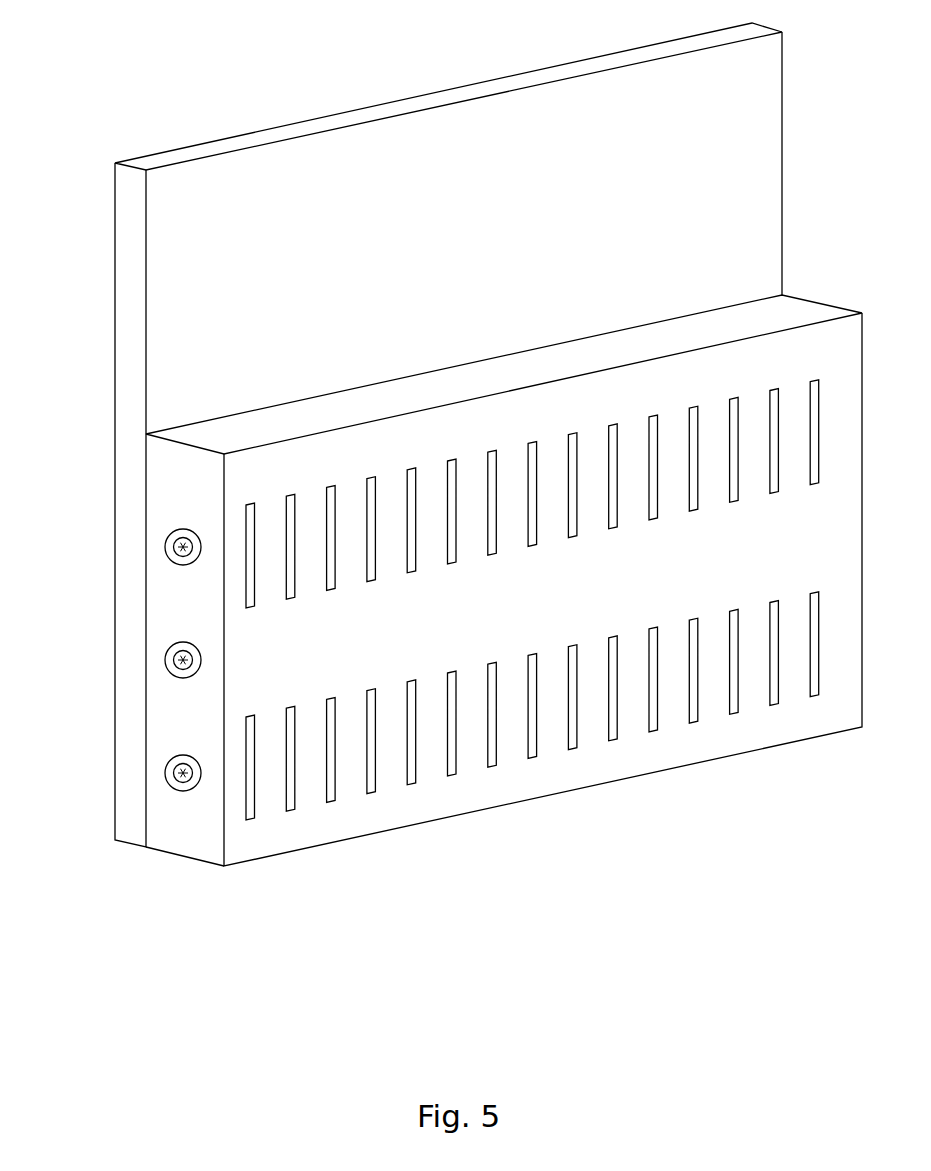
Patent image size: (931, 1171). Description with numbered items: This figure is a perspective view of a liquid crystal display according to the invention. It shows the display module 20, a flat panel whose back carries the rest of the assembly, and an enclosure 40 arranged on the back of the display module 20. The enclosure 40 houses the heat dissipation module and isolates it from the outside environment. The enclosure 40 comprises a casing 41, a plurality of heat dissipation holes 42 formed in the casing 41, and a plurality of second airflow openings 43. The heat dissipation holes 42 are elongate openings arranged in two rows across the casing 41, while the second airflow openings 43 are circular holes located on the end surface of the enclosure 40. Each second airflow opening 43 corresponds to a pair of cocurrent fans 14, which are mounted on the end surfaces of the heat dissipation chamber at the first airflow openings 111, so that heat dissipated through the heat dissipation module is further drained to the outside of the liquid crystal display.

The display module 20 is at (157, 163).
The enclosure 40 is at (445, 674).
The casing 41 is at (318, 822).
The heat dissipation holes 42 is at (250, 820).
The second airflow openings 43 is at (118, 736).
The cocurrent fans 14 is at (114, 529).
The first airflow openings 111 is at (175, 552).